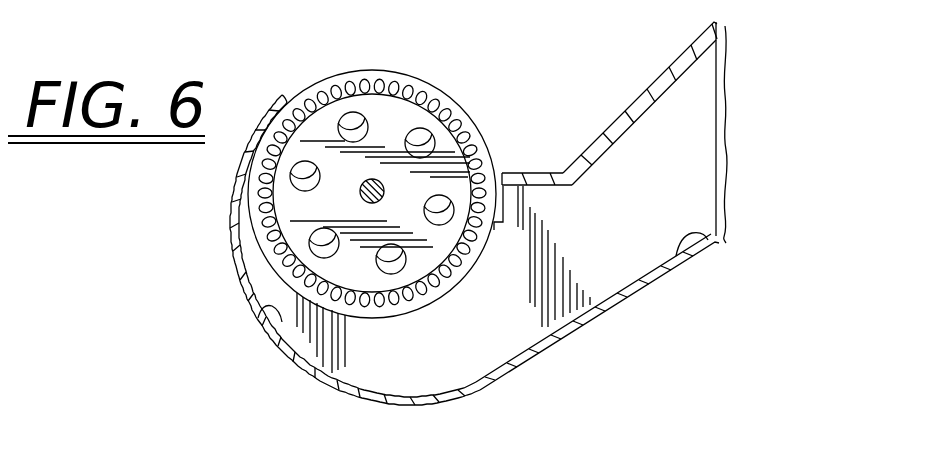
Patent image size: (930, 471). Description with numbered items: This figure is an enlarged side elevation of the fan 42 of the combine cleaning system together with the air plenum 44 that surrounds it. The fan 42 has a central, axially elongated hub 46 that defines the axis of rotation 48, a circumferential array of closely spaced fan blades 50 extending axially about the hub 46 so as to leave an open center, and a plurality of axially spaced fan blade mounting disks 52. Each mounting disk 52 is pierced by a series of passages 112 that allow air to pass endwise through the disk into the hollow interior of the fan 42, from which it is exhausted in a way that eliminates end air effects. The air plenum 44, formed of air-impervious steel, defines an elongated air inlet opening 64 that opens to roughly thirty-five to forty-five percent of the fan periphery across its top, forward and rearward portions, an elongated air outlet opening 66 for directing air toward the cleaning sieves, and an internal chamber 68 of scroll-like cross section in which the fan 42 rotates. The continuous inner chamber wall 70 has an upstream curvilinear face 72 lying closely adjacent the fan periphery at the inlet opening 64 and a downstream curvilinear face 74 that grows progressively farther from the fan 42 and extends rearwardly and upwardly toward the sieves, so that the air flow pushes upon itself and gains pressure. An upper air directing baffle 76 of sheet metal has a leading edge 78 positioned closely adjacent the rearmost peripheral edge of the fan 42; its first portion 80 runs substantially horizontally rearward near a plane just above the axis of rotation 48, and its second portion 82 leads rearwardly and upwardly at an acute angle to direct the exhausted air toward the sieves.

The fan 42 is at (330, 325).
The air plenum 44 is at (598, 345).
The hub 46 is at (433, 287).
The axis of rotation 48 is at (361, 187).
The fan blades 50 is at (296, 230).
The fan blade mounting disks 52 is at (388, 120).
The air inlet opening 64 is at (283, 100).
The air outlet opening 66 is at (693, 175).
The internal chamber 68 is at (490, 390).
The inner chamber wall 70 is at (268, 312).
The upstream curvilinear face 72 is at (258, 131).
The downstream curvilinear face 74 is at (710, 250).
The upper air directing baffle 76 is at (614, 103).
The leading edge 78 is at (503, 173).
The first portion 80 is at (543, 173).
The second portion 82 is at (681, 56).
The passages 112 is at (363, 111).